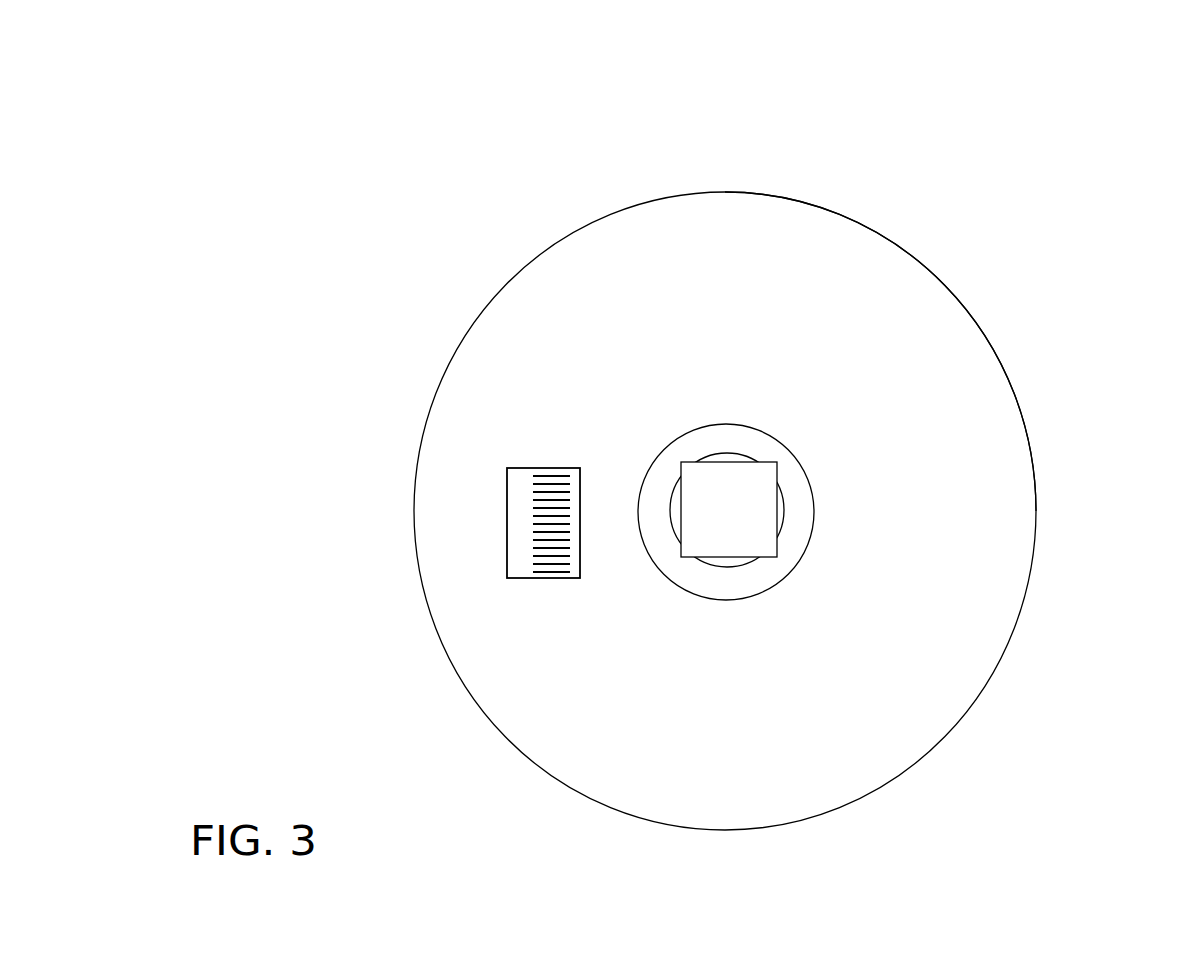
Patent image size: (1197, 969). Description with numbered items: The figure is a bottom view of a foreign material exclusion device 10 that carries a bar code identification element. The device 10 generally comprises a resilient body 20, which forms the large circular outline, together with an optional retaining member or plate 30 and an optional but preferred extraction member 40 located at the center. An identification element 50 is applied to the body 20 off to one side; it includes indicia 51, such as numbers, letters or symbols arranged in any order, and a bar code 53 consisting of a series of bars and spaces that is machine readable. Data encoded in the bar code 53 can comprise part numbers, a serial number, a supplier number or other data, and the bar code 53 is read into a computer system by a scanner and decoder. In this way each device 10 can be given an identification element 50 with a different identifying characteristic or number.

The foreign material exclusion device 10 is at (729, 190).
The resilient body 20 is at (852, 210).
The retaining member or plate 30 is at (815, 506).
The extraction member 40 is at (727, 512).
The identification element 50 is at (503, 517).
The indicia 51 is at (516, 559).
The bar code 53 is at (550, 476).